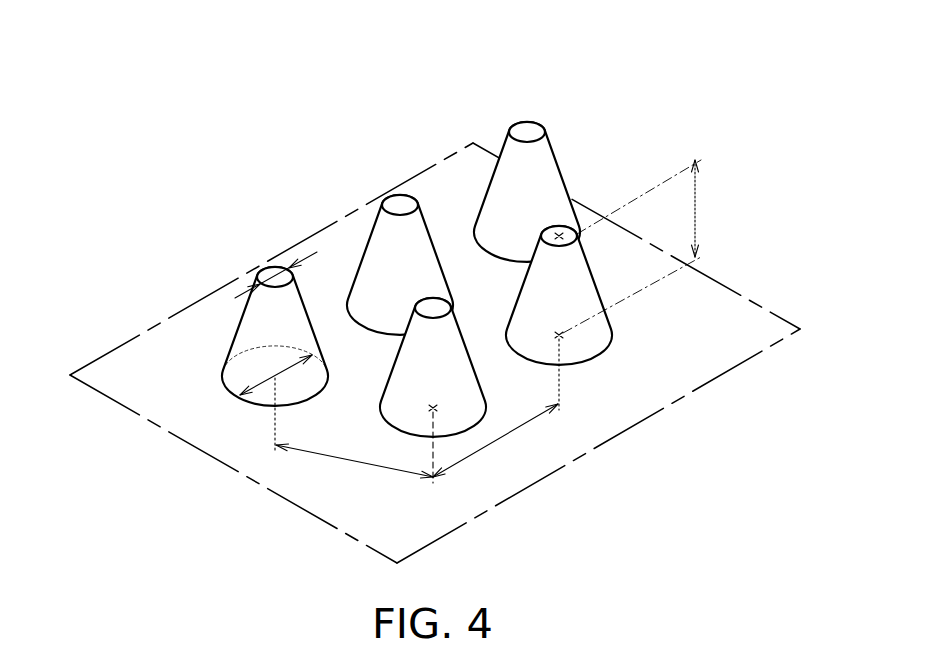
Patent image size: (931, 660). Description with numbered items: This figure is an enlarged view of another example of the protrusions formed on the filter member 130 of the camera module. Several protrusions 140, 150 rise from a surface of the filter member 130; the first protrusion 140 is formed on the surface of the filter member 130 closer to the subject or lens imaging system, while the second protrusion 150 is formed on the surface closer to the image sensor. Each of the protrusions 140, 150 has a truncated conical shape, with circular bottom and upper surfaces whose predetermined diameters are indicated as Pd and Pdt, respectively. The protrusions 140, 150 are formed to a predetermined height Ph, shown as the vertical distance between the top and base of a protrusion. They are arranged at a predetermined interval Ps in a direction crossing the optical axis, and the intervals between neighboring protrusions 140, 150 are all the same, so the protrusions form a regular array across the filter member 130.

The filter member 130 is at (640, 391).
The first protrusion 140 is at (417, 279).
The second protrusion 150 is at (375, 278).
The upper surface diameter Pdt is at (272, 272).
The bottom surface diameter Pd is at (276, 372).
The protrusion interval Ps is at (417, 416).
The protrusion height Ph is at (646, 246).